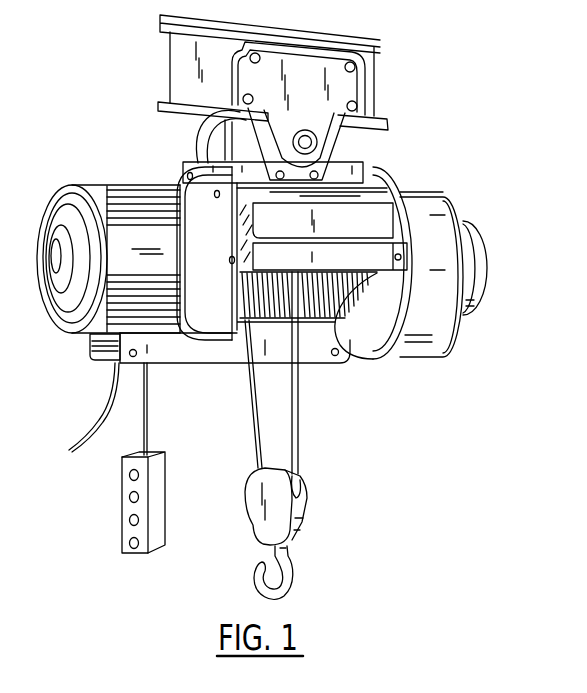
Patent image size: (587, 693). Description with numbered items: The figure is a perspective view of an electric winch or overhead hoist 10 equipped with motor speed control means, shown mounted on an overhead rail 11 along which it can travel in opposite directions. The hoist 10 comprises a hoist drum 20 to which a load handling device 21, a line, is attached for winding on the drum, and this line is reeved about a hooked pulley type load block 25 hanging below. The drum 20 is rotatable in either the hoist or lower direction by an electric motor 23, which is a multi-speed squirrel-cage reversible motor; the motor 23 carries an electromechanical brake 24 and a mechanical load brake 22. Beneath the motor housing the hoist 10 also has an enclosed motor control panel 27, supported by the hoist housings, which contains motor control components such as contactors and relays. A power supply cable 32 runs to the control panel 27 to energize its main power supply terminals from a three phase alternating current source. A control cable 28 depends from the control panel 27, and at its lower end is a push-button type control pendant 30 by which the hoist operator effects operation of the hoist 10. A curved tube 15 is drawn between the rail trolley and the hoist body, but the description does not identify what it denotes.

The electric winch or overhead hoist 10 is at (404, 168).
The overhead rail 11 is at (331, 40).
The hose / conduit 15 is at (198, 144).
The hoist drum 20 is at (303, 365).
The load handling device 21 is at (299, 443).
The mechanical load brake 22 is at (443, 208).
The electric motor 23 is at (121, 181).
The electromechanical brake 24 is at (473, 244).
The load block 25 is at (262, 503).
The motor control panel 27 is at (92, 347).
The control cable 28 is at (148, 425).
The control pendant 30 is at (122, 488).
The power supply cable 32 is at (87, 412).